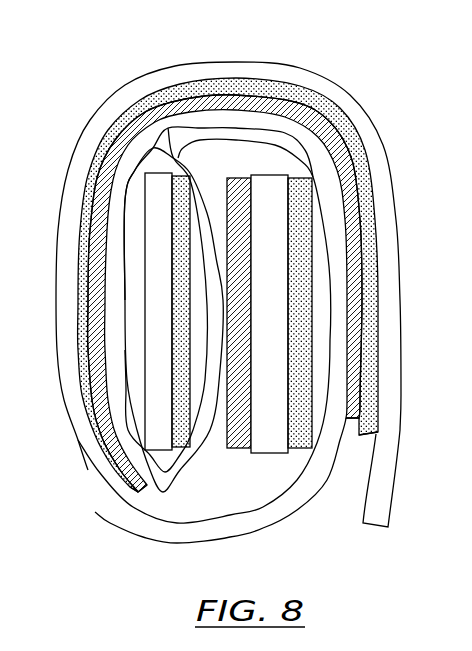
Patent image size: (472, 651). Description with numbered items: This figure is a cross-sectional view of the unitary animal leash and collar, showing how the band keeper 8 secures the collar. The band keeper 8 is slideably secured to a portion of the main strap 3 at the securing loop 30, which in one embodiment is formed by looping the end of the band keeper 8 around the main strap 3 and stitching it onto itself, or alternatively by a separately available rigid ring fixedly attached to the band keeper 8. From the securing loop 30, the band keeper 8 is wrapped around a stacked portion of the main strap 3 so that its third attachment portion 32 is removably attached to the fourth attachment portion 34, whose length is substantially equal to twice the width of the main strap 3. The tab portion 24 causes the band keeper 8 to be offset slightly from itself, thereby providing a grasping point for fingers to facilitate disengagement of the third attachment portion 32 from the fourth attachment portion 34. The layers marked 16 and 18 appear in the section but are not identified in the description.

The main strap 3 is at (152, 172).
The band keeper 8 is at (398, 168).
The separator layer 16 is at (236, 178).
The coating layer 18 is at (180, 175).
The tab portion 24 is at (394, 478).
The securing loop 30 is at (224, 531).
The third attachment portion 32 is at (147, 493).
The fourth attachment portion 34 is at (370, 436).